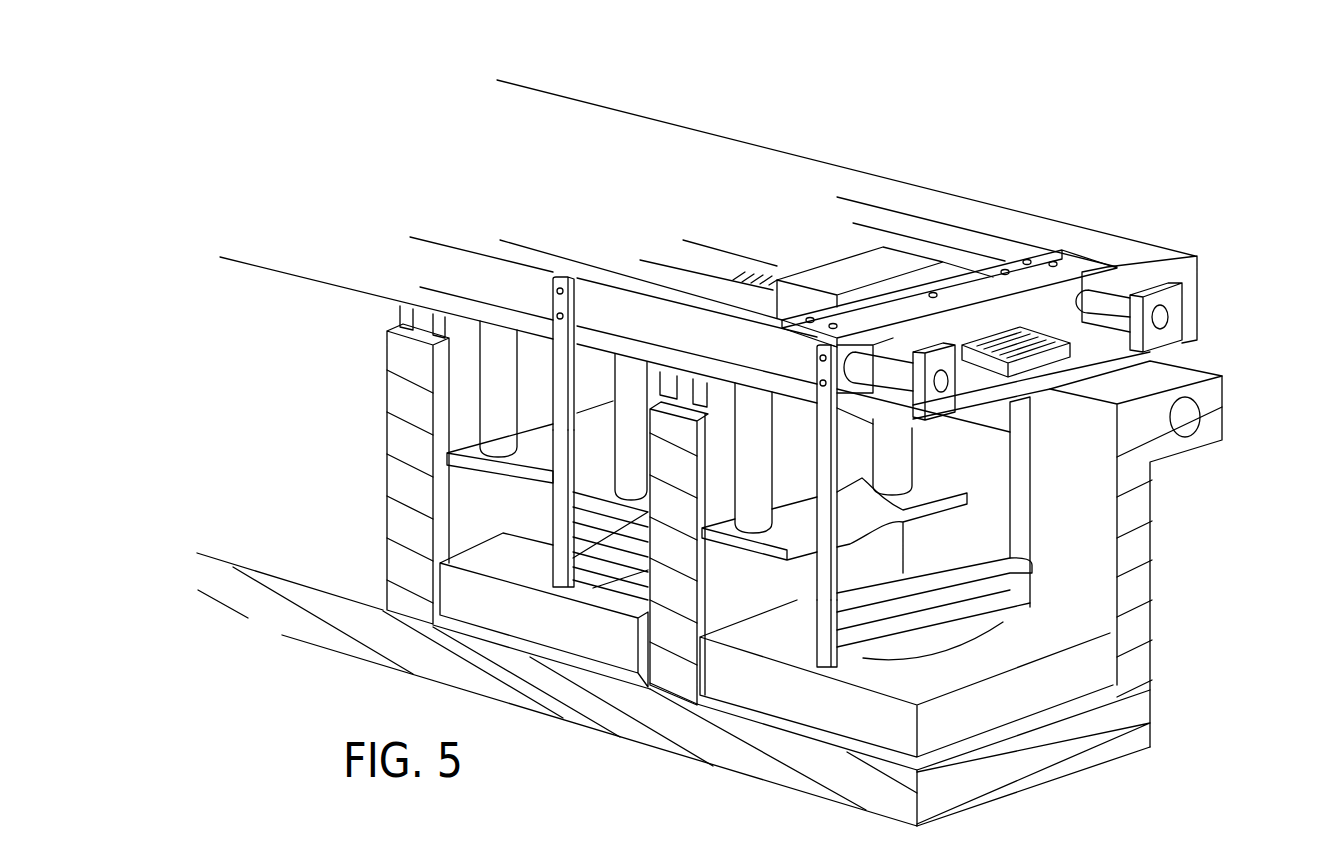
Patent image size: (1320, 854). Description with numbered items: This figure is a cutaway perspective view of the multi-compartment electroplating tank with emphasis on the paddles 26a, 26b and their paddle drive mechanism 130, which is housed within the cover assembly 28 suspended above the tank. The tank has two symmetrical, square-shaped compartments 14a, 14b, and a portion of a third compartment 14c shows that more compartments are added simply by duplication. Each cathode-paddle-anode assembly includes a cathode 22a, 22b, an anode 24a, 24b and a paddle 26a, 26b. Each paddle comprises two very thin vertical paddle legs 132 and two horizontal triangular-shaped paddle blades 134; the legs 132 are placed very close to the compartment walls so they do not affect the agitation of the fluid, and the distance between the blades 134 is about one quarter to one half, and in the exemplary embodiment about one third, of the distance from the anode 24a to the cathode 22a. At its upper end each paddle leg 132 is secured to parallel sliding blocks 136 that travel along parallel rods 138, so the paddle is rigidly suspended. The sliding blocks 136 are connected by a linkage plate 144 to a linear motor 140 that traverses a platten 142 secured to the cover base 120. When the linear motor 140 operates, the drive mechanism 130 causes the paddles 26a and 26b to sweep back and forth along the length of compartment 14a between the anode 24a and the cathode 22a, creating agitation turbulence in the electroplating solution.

The compartment 14a is at (1102, 525).
The compartment 14b is at (545, 519).
The third compartment 14c is at (325, 509).
The cathode 22a is at (810, 704).
The cathode 22b is at (557, 622).
The anode 24a is at (772, 531).
The anode 24b is at (476, 450).
The paddle 26a is at (821, 619).
The paddle 26b is at (558, 540).
The cover assembly 28 is at (1203, 302).
The cover base 120 is at (990, 392).
The paddle drive mechanism 130 is at (915, 165).
The paddle leg 132 is at (819, 557).
The paddle blade 134 is at (998, 566).
The sliding block 136 is at (580, 270).
The rod 138 is at (1120, 293).
The linear motor 140 is at (853, 260).
The platten 142 is at (703, 253).
The linkage plate 144 is at (1024, 260).